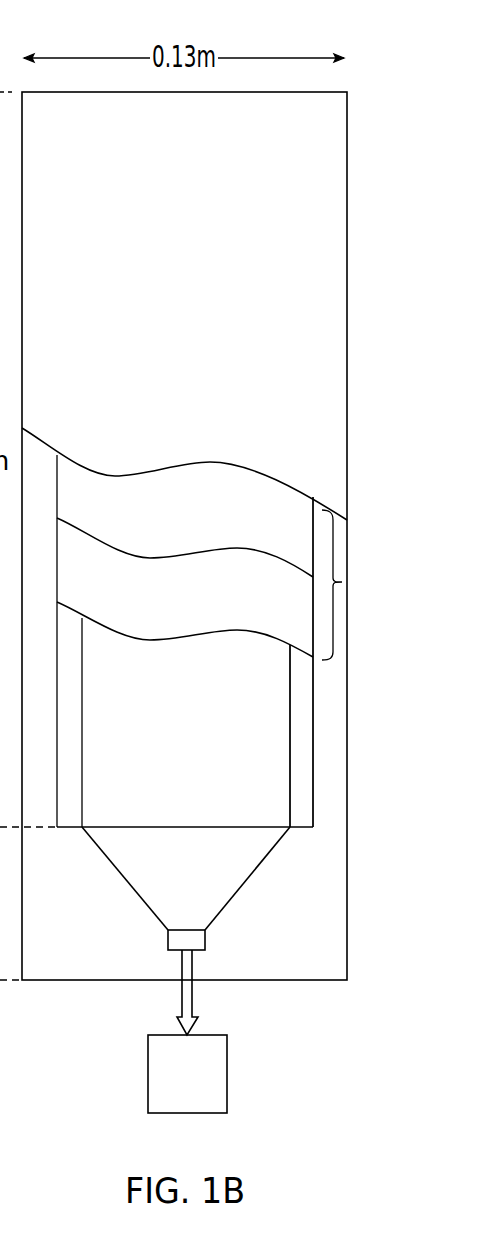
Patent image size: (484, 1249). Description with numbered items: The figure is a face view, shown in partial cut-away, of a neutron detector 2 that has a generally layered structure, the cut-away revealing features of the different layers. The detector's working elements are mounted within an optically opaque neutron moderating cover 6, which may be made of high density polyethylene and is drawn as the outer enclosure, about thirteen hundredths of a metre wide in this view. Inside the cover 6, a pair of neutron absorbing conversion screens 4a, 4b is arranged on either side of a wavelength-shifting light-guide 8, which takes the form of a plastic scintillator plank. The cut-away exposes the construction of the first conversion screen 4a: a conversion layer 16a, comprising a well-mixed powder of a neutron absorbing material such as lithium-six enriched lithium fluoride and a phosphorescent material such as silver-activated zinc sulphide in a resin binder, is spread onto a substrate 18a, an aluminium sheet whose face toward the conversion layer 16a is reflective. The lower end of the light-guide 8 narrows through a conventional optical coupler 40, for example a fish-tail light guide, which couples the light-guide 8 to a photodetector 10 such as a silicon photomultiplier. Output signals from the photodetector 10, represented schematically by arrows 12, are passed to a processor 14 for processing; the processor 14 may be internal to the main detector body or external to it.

The neutron detector 2 is at (364, 68).
The neutron moderating cover 6 is at (305, 152).
The substrate 18a is at (207, 529).
The conversion layer 16a is at (207, 612).
The neutron absorbing conversion screen 4a is at (342, 582).
The neutron absorbing conversion screen 4b is at (302, 787).
The wavelength-shifting light-guide 8 is at (192, 750).
The optical coupler 40 is at (200, 887).
The photodetector 10 is at (175, 953).
The arrows 12 is at (180, 1000).
The processor 14 is at (203, 1086).